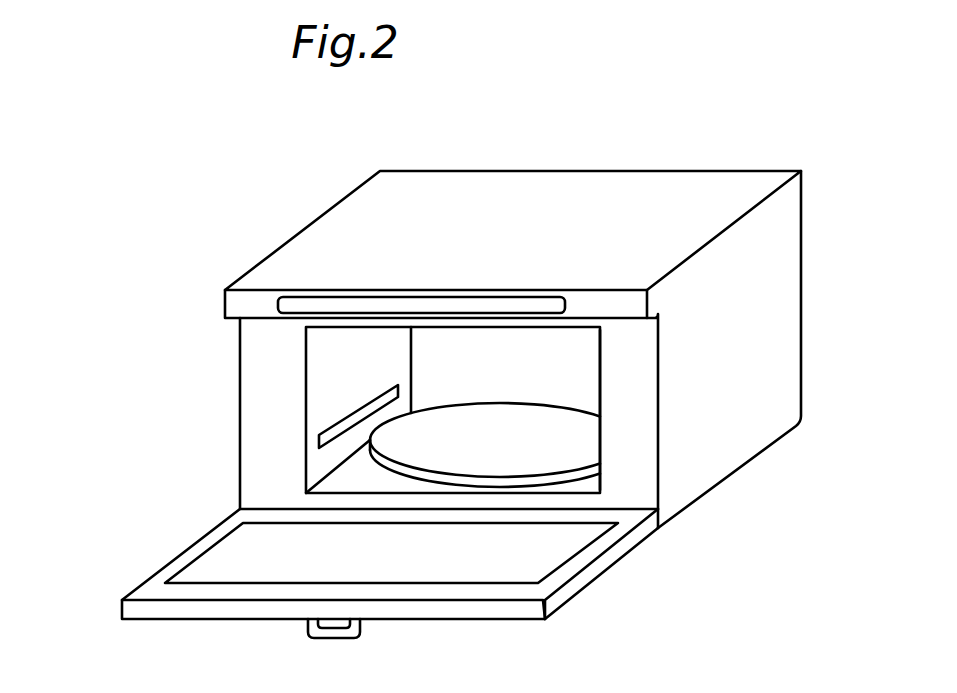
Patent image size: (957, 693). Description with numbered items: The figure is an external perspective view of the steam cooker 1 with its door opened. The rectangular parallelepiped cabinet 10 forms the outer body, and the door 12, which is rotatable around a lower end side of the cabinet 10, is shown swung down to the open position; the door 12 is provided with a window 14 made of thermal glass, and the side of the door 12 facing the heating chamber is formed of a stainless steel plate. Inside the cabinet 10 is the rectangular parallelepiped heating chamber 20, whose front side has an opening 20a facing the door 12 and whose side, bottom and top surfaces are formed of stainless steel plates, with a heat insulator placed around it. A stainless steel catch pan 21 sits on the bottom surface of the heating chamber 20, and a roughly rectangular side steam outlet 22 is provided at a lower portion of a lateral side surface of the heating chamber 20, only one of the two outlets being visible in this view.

The steam cooker 1 is at (769, 152).
The cabinet 10 is at (307, 265).
The door 12 is at (603, 562).
The window 14 is at (262, 558).
The heating chamber 20 is at (330, 349).
The opening 20a is at (583, 352).
The catch pan 21 is at (405, 448).
The side steam outlet 22 is at (333, 438).